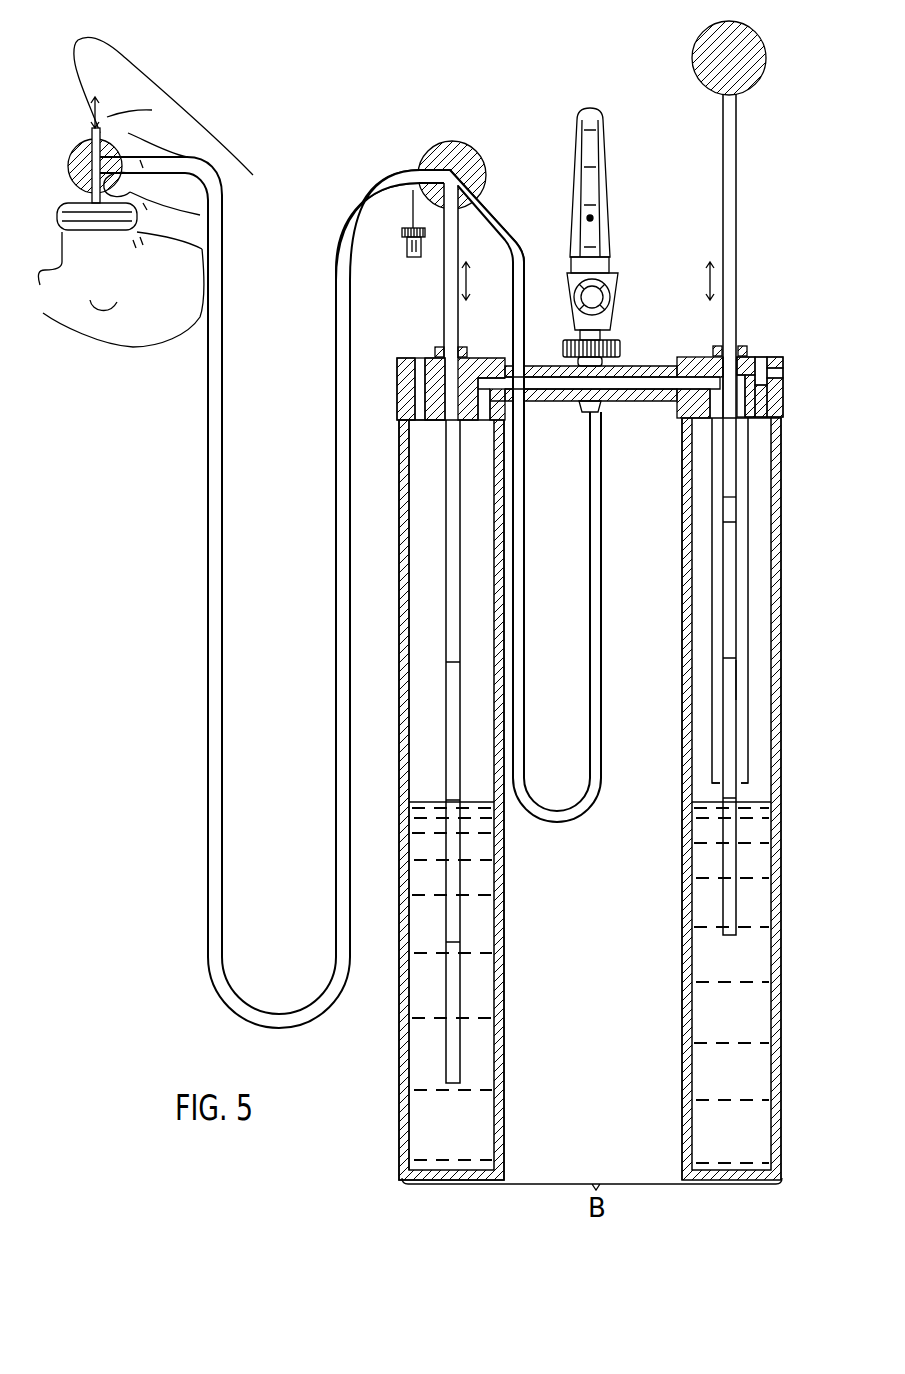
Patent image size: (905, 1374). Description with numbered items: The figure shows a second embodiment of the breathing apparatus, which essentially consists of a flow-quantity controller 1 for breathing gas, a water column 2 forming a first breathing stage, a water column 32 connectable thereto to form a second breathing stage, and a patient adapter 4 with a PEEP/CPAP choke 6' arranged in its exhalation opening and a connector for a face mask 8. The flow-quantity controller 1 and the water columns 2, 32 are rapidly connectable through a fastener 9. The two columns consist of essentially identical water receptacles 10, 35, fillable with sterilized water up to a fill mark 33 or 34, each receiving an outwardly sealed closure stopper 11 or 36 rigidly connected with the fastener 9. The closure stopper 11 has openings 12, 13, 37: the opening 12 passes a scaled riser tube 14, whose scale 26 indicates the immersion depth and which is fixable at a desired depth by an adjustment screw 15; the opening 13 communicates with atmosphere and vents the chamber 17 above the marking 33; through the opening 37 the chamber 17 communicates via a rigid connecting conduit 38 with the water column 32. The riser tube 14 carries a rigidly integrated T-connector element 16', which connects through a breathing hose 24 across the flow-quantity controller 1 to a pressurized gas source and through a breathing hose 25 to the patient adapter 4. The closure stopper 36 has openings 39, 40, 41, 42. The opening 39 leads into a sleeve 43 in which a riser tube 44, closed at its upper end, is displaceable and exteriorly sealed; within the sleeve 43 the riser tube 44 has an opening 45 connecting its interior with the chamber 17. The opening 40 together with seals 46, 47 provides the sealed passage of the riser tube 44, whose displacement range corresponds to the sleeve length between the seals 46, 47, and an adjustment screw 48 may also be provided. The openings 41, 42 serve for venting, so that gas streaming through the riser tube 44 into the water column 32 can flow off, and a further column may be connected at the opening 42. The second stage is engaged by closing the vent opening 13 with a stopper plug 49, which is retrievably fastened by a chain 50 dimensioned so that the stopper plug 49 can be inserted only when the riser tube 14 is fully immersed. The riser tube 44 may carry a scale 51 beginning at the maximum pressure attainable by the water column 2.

The flow-quantity controller 1 is at (604, 155).
The water column 2 is at (400, 1166).
The patient adapter 4 is at (72, 138).
The PEEP/CPAP choke 6' is at (76, 130).
The face mask 8 is at (77, 212).
The fastener 9 is at (600, 405).
The water receptacle 10 is at (403, 528).
The closure stopper 11 is at (398, 383).
The opening 12 is at (447, 426).
The opening 13 is at (420, 405).
The riser tube 14 is at (444, 265).
The adjustment screw 15 is at (440, 348).
The T-connector element 16' is at (430, 219).
The chamber 17 is at (420, 555).
The breathing hose 24 is at (602, 472).
The breathing hose 25 is at (208, 497).
The scale 26 is at (455, 675).
The water column 32 is at (683, 1166).
The fill mark 33 is at (425, 805).
The fill mark 34 is at (702, 803).
The water receptacle 35 is at (684, 588).
The closure stopper 36 is at (783, 404).
The opening 37 is at (491, 420).
The connecting conduit 38 is at (587, 385).
The opening 39 is at (697, 382).
The opening 40 is at (718, 383).
The opening 41 is at (761, 360).
The opening 42 is at (774, 374).
The sleeve 43 is at (712, 637).
The riser tube 44 is at (737, 292).
The opening 45 is at (723, 497).
The seal 46 is at (716, 360).
The seal 47 is at (718, 784).
The adjustment screw 48 is at (744, 346).
The stopper plug 49 is at (407, 246).
The chain 50 is at (413, 208).
The scale 51 is at (732, 668).